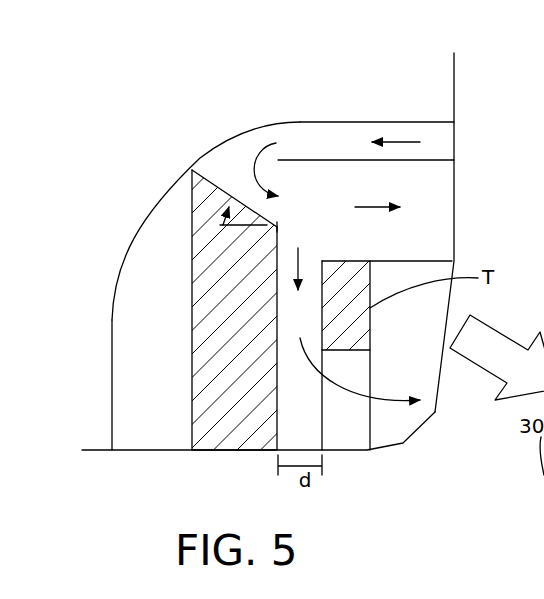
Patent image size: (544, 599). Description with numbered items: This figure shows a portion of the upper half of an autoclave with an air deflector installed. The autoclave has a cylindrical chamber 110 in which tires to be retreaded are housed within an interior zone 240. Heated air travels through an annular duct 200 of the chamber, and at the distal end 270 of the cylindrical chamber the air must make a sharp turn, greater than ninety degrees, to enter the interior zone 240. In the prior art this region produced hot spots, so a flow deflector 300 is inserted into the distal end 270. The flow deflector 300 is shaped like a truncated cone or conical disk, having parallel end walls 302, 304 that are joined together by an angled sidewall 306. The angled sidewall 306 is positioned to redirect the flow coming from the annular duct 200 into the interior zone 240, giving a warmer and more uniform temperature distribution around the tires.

The cylindrical chamber 110 is at (228, 138).
The annular duct 200 is at (363, 132).
The interior zone 240 is at (422, 217).
The distal end 270 is at (110, 412).
The flow deflector 300 is at (211, 229).
The end wall 302 is at (278, 228).
The end wall 304 is at (192, 322).
The angled sidewall 306 is at (227, 189).